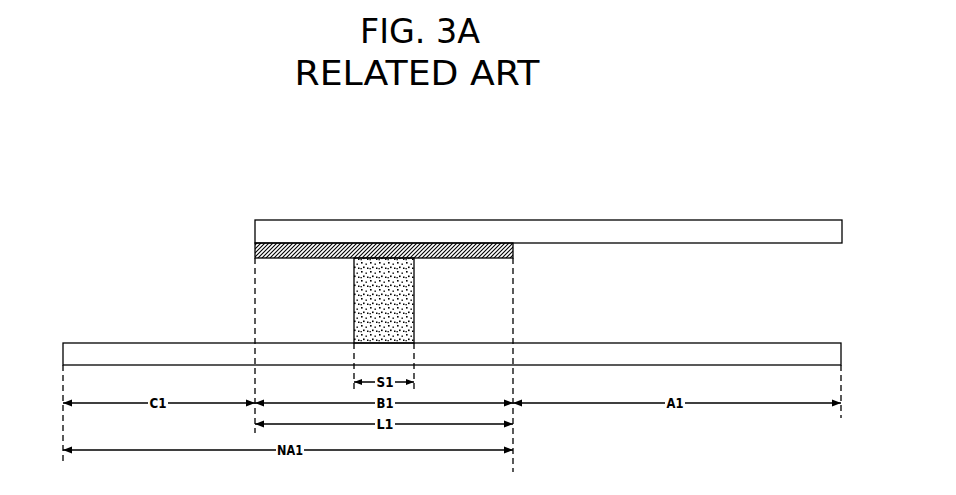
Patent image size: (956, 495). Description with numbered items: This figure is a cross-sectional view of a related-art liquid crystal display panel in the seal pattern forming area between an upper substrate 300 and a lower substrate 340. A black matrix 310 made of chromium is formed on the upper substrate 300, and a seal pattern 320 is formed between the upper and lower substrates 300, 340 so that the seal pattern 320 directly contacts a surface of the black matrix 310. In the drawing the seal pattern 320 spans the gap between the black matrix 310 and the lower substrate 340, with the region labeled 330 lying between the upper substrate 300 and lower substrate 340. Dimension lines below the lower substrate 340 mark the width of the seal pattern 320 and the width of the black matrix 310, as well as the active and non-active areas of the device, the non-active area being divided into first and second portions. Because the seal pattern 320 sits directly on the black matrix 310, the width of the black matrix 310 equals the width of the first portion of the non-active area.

The upper substrate 300 is at (614, 230).
The black matrix 310 is at (477, 248).
The seal pattern 320 is at (410, 288).
The gap region 330 is at (723, 277).
The lower substrate 340 is at (793, 353).